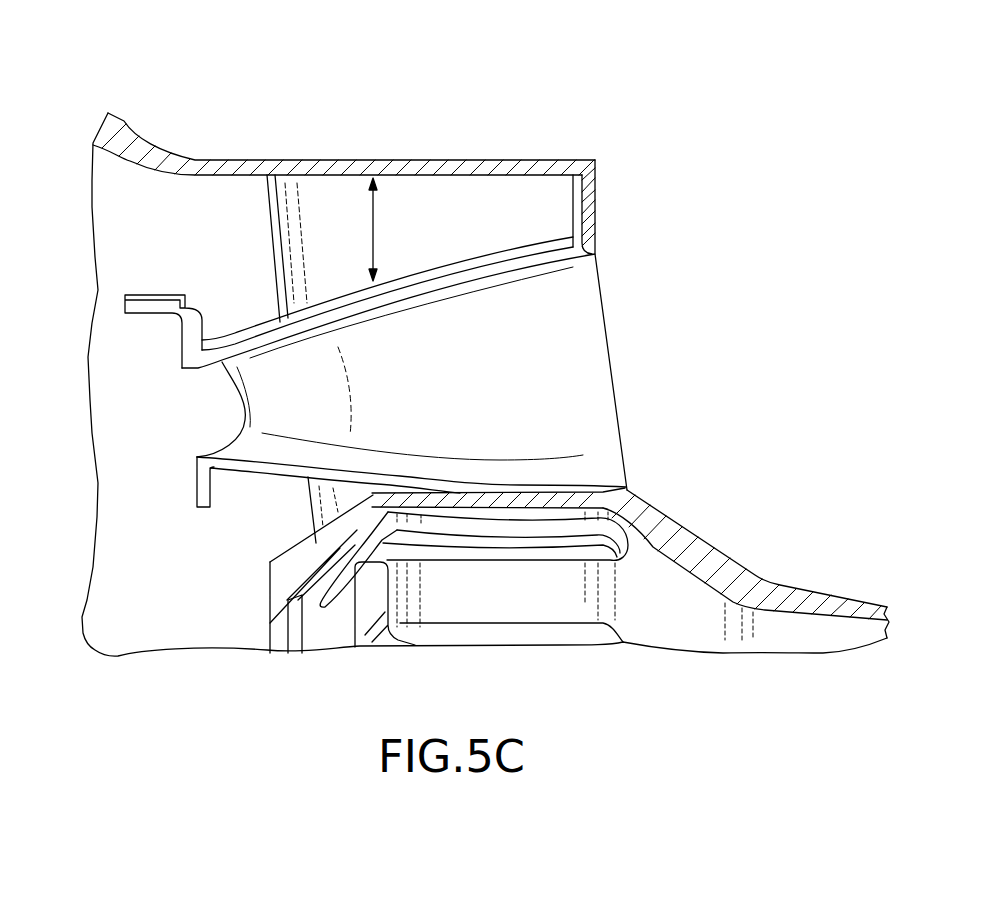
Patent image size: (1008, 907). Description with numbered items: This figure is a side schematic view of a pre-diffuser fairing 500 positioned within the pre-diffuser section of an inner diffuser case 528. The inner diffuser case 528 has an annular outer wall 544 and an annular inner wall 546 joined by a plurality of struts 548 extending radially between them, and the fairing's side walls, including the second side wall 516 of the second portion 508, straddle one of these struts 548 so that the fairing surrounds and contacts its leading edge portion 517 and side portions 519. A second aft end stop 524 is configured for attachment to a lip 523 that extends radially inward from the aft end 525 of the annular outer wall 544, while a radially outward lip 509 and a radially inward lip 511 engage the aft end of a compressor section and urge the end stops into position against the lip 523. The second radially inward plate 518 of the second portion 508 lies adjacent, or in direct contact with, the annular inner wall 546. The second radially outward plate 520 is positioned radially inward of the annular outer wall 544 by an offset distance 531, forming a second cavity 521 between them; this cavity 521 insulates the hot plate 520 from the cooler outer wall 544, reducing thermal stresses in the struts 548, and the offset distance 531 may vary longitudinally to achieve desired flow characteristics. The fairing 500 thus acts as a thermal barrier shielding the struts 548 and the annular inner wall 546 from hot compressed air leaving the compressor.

The pre-diffuser fairing 500 is at (645, 287).
The second portion 508 is at (637, 347).
The radially outward lip 509 is at (182, 342).
The radially inward lip 511 is at (197, 482).
The second side wall 516 is at (590, 403).
The leading edge portion 517 is at (273, 197).
The second radially inward plate 518 is at (603, 483).
The side portions 519 is at (455, 197).
The second radially outward plate 520 is at (347, 297).
The second cavity 521 is at (395, 220).
The lip 523 is at (590, 213).
The second aft end stop 524 is at (577, 197).
The aft end 525 is at (608, 160).
The inner diffuser case 528 is at (390, 138).
The offset distance 531 is at (367, 213).
The annular outer wall 544 is at (223, 170).
The annular inner wall 546 is at (673, 545).
The struts 548 is at (475, 205).